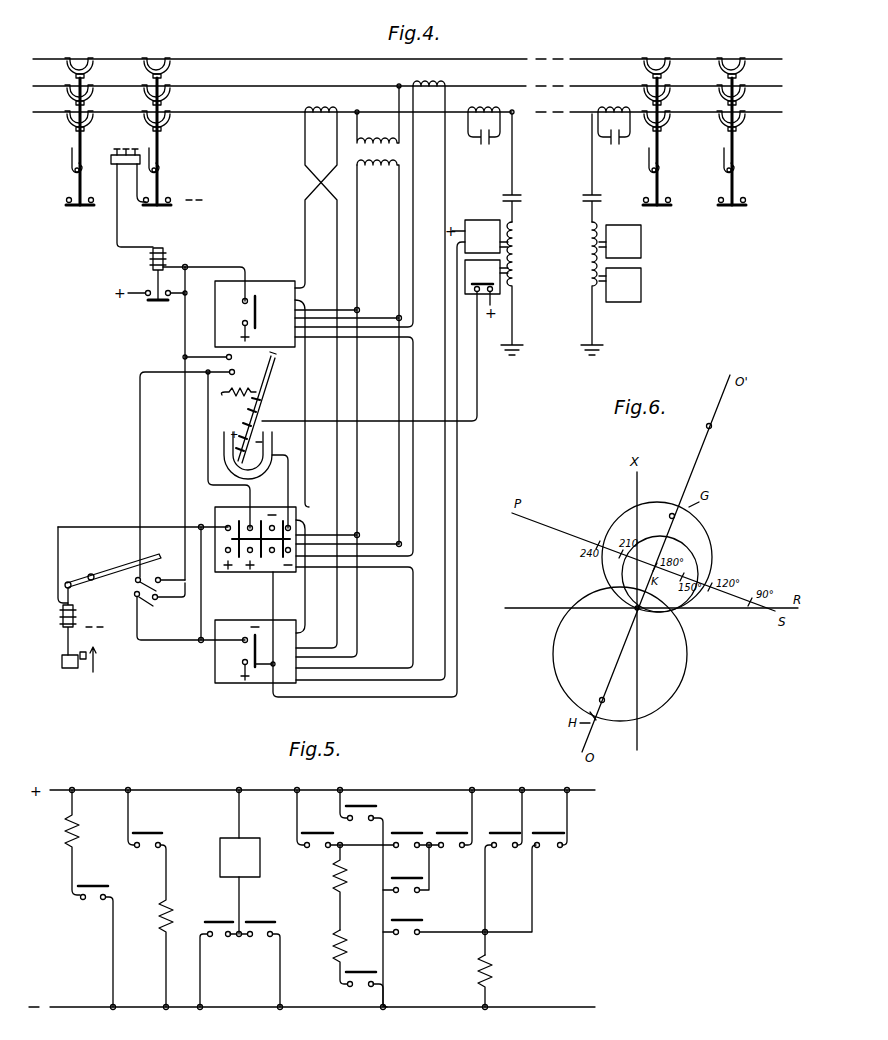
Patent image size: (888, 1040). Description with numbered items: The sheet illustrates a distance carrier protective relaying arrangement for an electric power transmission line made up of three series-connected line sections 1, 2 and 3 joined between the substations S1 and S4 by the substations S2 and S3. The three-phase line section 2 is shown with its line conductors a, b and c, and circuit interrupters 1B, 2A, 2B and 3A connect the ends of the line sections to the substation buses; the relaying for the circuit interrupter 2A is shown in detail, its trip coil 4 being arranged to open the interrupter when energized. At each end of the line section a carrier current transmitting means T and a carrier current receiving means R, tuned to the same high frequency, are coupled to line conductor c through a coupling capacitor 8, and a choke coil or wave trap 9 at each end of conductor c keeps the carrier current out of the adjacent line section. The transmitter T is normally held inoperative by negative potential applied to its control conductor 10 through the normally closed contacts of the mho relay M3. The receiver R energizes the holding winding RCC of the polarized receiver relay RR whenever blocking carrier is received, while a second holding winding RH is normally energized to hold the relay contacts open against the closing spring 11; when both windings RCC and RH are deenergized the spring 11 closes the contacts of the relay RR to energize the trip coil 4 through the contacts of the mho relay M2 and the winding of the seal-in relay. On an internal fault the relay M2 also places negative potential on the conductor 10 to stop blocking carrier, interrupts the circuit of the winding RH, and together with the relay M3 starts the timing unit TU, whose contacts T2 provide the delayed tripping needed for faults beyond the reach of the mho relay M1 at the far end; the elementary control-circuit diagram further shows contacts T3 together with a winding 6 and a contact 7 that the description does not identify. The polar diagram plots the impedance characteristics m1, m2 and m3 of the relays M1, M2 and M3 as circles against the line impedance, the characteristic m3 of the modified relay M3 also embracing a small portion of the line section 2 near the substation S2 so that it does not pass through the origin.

In FIG. 4, the line section 1 is at (54, 112).
In FIG. 4, the line section 2 is at (514, 110).
In FIG. 4, the line section 3 is at (772, 112).
In FIG. 4, the line conductor a is at (236, 60).
In FIG. 4, the line conductor b is at (233, 87).
In FIG. 4, the line conductor c is at (229, 113).
In FIG. 4, the circuit interrupter 1B is at (77, 138).
In FIG. 4, the circuit interrupter 2A is at (160, 138).
In FIG. 4, the circuit interrupter 2B is at (660, 144).
In FIG. 4, the circuit interrupter 3A is at (735, 144).
In FIG. 4, the trip coil 4 is at (122, 150).
In FIG. 5, the trip coil 4 is at (348, 957).
In FIG. 4, the transformer winding 6 is at (387, 161).
In FIG. 4, the contact 7 is at (169, 200).
In FIG. 5, the contact 7 is at (364, 984).
In FIG. 4, the coupling capacitor 8 is at (521, 203).
In FIG. 4, the choke coil or wave trap 9 is at (496, 136).
In FIG. 4, the control conductor 10 is at (458, 582).
In FIG. 5, the control conductor 10 is at (242, 894).
In FIG. 4, the closing spring 11 is at (246, 394).
In FIG. 4, the substation S1 is at (167, 262).
In FIG. 6, the substation S1 is at (600, 698).
In FIG. 5, the substation S1 is at (365, 898).
In FIG. 4, the substation S2 is at (122, 112).
In FIG. 6, the substation S2 is at (634, 610).
In FIG. 4, the substation S3 is at (705, 112).
In FIG. 6, the substation S3 is at (674, 518).
In FIG. 6, the substation S4 is at (712, 427).
In FIG. 4, the carrier current transmitting means T is at (553, 239).
In FIG. 5, the carrier current transmitting means T is at (240, 833).
In FIG. 4, the carrier current receiving means R is at (553, 281).
In FIG. 5, the carrier current receiving means R is at (145, 819).
In FIG. 4, the mho relay M1 is at (272, 278).
In FIG. 5, the mho relay M1 is at (345, 819).
In FIG. 4, the mho relay M2 is at (268, 502).
In FIG. 5, the mho relay M2 is at (322, 898).
In FIG. 4, the mho relay M3 is at (272, 615).
In FIG. 5, the mho relay M3 is at (361, 898).
In FIG. 4, the holding winding RCC is at (349, 358).
In FIG. 5, the holding winding RCC is at (181, 926).
In FIG. 4, the holding winding RH is at (249, 427).
In FIG. 5, the holding winding RH is at (82, 842).
In FIG. 4, the receiver relay RR is at (248, 480).
In FIG. 5, the receiver relay RR is at (415, 833).
In FIG. 4, the contacts of timing unit T2 is at (161, 589).
In FIG. 5, the contacts of timing unit T2 is at (406, 869).
In FIG. 4, the contact T3 is at (160, 601).
In FIG. 5, the contact T3 is at (459, 890).
In FIG. 4, the timing unit TU is at (110, 611).
In FIG. 5, the timing unit TU is at (497, 969).
In FIG. 6, the impedance characteristic m1 is at (699, 561).
In FIG. 6, the impedance characteristic m2 is at (714, 537).
In FIG. 6, the impedance characteristic m3 is at (684, 658).